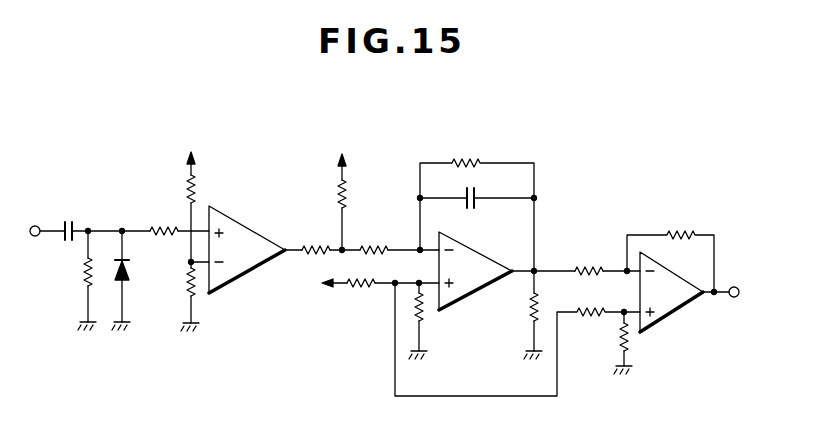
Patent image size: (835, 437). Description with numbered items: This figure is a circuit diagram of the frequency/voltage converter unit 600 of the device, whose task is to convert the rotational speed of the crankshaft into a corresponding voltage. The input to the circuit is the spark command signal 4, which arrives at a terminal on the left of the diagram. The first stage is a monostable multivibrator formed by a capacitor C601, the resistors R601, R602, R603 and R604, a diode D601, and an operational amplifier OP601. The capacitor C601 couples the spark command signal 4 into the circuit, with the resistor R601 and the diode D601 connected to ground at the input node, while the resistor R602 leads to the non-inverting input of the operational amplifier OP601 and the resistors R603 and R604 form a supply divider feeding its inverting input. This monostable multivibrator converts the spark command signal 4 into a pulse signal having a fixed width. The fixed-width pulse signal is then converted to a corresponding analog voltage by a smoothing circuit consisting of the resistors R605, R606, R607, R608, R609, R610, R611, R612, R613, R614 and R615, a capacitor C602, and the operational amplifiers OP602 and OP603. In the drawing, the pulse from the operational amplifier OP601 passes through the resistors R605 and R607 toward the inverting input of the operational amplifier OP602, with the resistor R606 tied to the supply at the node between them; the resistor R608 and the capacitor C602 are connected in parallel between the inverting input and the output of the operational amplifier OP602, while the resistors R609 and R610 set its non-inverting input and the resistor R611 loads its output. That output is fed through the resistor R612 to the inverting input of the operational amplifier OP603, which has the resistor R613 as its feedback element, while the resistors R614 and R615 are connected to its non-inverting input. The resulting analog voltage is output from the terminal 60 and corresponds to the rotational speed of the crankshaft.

The frequency/voltage converter unit 600 is at (255, 134).
The spark command signal 4 is at (47, 182).
The terminal 60 is at (735, 287).
The capacitor C601 is at (70, 222).
The capacitor C602 is at (490, 187).
The diode D601 is at (129, 271).
The resistor R601 is at (84, 274).
The resistor R602 is at (162, 228).
The resistor R603 is at (195, 189).
The resistor R604 is at (195, 300).
The resistor R605 is at (315, 248).
The resistor R606 is at (345, 199).
The resistor R607 is at (374, 248).
The resistor R608 is at (466, 161).
The resistor R609 is at (361, 286).
The resistor R610 is at (424, 312).
The resistor R611 is at (538, 300).
The resistor R612 is at (590, 268).
The resistor R613 is at (684, 232).
The resistor R614 is at (593, 316).
The resistor R615 is at (629, 343).
The operational amplifier OP601 is at (246, 274).
The operational amplifier OP602 is at (482, 290).
The operational amplifier OP603 is at (686, 305).